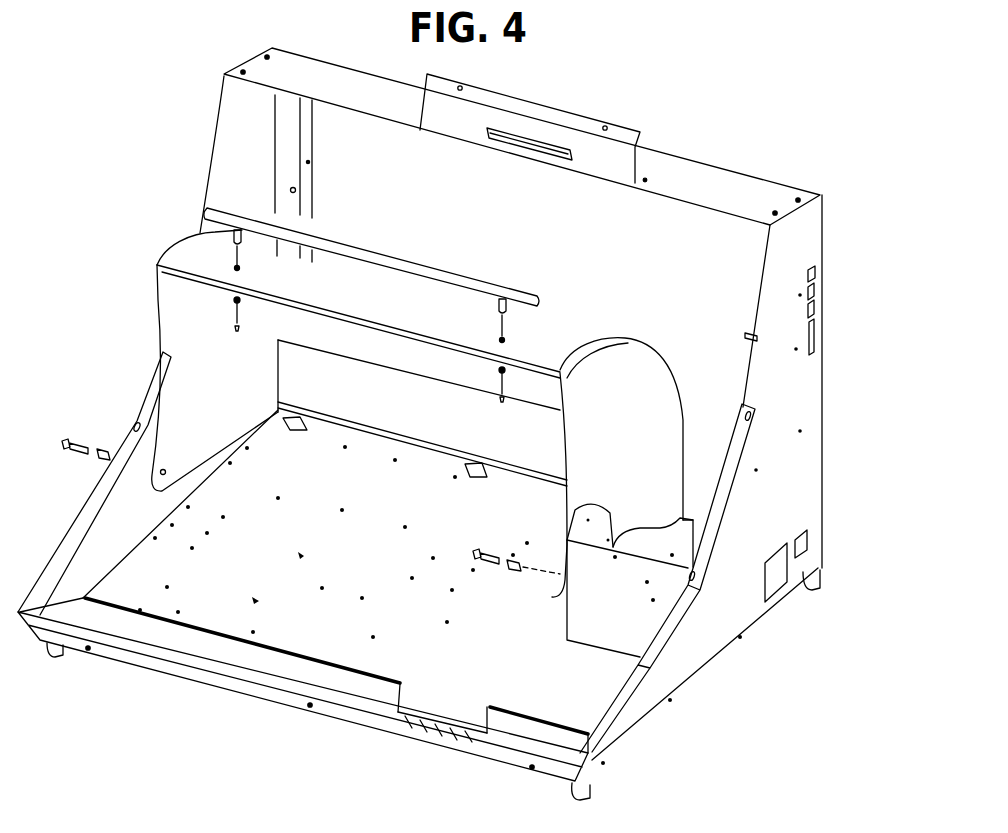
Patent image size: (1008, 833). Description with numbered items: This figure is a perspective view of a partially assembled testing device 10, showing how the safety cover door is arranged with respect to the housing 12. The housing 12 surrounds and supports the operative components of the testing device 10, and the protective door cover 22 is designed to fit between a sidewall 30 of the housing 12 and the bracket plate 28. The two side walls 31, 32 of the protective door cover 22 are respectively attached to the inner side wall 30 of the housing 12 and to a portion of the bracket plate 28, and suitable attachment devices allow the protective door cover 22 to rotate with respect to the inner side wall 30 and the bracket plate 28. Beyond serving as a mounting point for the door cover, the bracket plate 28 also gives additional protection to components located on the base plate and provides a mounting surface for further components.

The testing device 10 is at (732, 147).
The housing 12 is at (803, 465).
The protective door cover 22 is at (623, 398).
The bracket plate 28 is at (630, 630).
The sidewall 30 is at (117, 523).
The side wall 31 is at (193, 350).
The side wall 32 is at (597, 478).